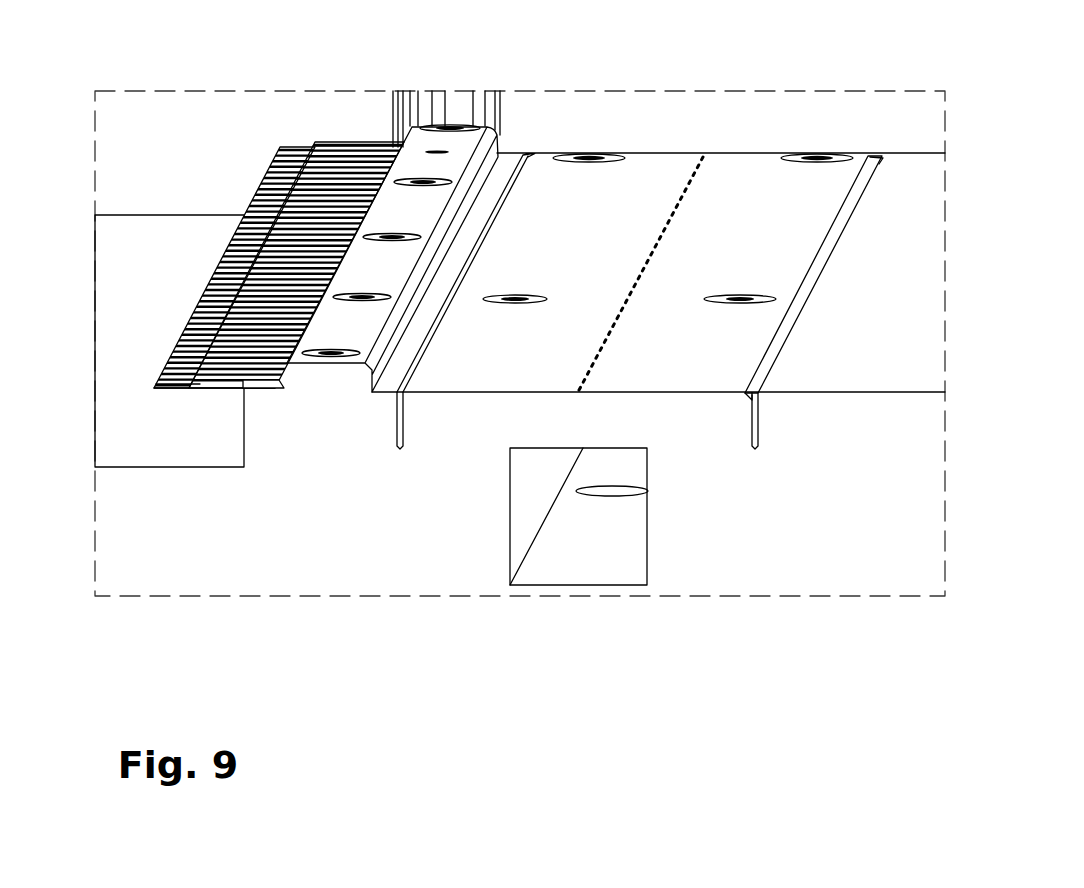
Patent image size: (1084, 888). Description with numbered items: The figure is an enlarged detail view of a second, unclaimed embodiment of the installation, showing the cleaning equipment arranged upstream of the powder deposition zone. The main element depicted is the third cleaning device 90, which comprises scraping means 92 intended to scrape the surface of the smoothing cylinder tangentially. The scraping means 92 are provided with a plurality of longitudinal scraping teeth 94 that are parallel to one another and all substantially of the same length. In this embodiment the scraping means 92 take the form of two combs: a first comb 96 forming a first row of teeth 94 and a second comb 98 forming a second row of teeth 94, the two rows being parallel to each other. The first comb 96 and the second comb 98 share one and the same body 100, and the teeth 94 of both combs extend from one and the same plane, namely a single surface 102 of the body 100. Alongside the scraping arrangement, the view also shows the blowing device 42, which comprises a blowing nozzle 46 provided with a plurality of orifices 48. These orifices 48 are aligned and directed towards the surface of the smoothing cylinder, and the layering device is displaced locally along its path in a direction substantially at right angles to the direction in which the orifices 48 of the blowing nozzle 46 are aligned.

The blowing device 42 is at (752, 347).
The blowing nozzle 46 is at (693, 380).
The orifices 48 is at (631, 292).
The third cleaning device 90 is at (753, 183).
The scraping means 92 is at (232, 190).
The scraping teeth 94 is at (256, 290).
The first comb 96 is at (168, 392).
The second comb 98 is at (213, 378).
The body 100 is at (332, 373).
The surface 102 is at (280, 384).